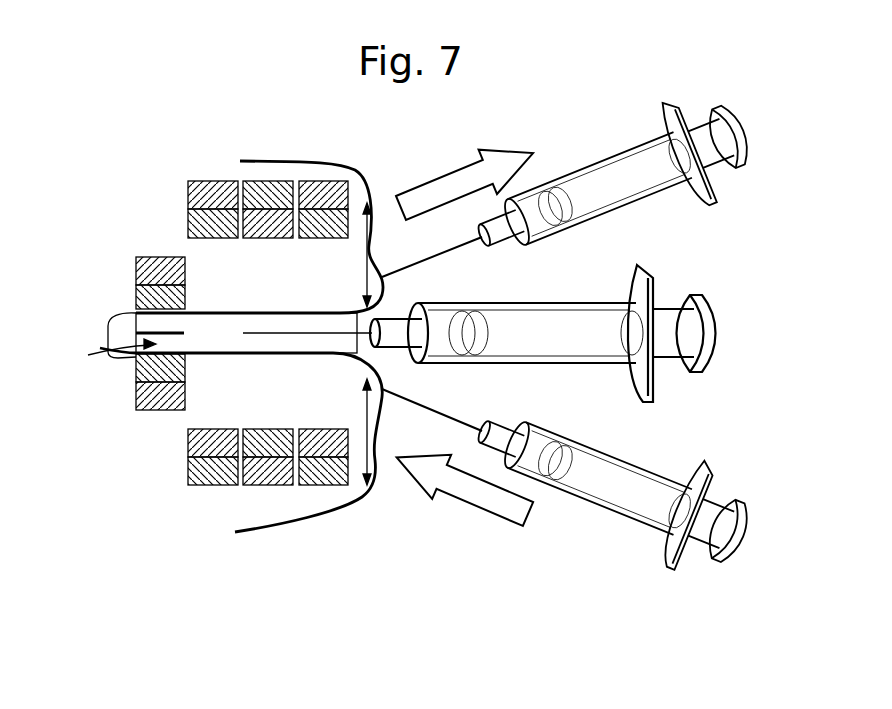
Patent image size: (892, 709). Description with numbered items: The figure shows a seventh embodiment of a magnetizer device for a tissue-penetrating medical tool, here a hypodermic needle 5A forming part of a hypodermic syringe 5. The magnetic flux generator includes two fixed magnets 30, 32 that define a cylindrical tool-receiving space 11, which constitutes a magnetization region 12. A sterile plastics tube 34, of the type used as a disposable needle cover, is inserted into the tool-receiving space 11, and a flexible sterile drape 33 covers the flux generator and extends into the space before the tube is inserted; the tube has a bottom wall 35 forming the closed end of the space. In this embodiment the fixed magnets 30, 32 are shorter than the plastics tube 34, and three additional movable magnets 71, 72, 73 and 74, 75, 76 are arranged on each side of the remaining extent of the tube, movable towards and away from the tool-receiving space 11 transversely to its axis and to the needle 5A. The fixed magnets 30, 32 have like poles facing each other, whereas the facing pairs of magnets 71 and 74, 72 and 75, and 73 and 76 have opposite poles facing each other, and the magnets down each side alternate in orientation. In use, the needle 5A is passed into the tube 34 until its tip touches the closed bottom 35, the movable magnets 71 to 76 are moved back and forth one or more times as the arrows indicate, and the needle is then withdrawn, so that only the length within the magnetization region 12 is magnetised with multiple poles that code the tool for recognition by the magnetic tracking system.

The hypodermic syringe 5 is at (547, 300).
The hypodermic needle 5A is at (457, 251).
The tool-receiving space 11 is at (109, 353).
The magnetization region 12 is at (292, 341).
The fixed magnet 30 is at (136, 398).
The fixed magnet 32 is at (136, 266).
The flexible sterile drape 33 is at (246, 312).
The plastics tube 34 is at (228, 350).
The bottom wall 35 is at (130, 322).
The movable magnet 71 is at (200, 181).
The movable magnet 72 is at (265, 181).
The movable magnet 73 is at (325, 181).
The movable magnet 74 is at (199, 487).
The movable magnet 75 is at (263, 487).
The movable magnet 76 is at (332, 487).